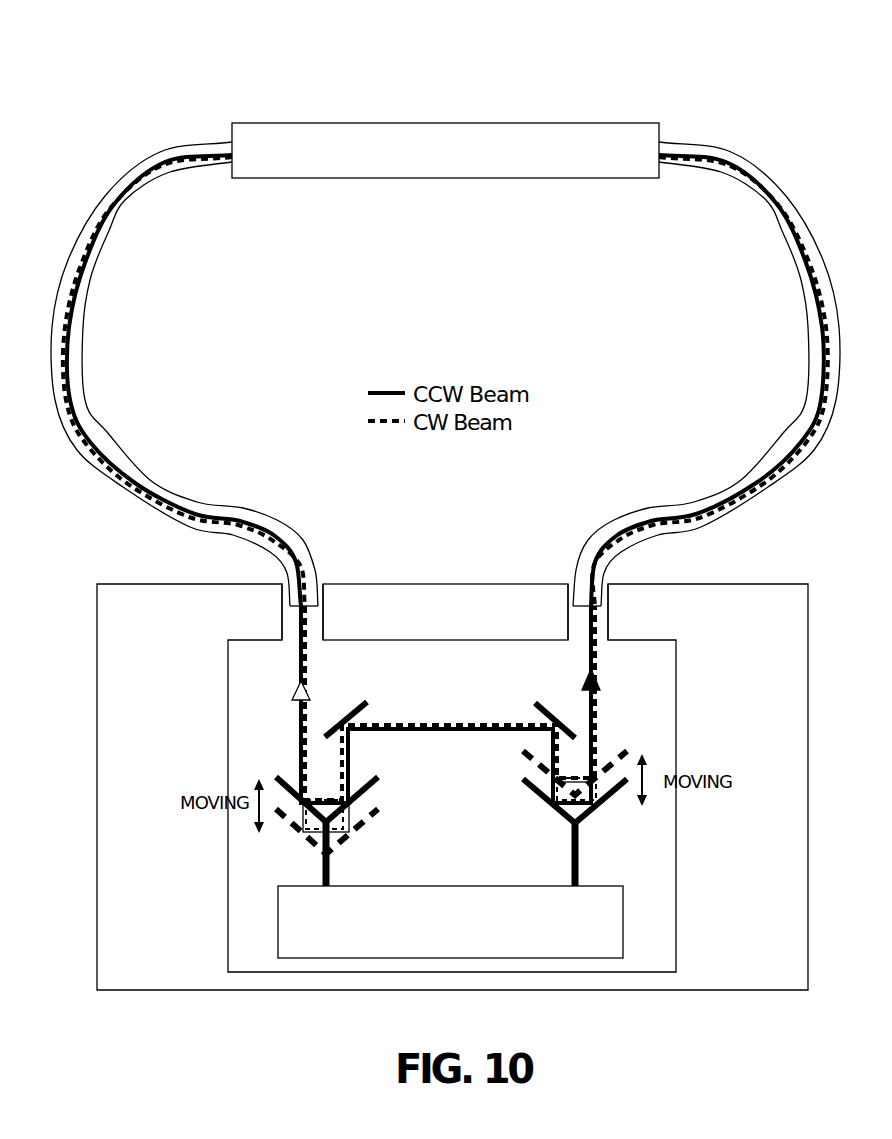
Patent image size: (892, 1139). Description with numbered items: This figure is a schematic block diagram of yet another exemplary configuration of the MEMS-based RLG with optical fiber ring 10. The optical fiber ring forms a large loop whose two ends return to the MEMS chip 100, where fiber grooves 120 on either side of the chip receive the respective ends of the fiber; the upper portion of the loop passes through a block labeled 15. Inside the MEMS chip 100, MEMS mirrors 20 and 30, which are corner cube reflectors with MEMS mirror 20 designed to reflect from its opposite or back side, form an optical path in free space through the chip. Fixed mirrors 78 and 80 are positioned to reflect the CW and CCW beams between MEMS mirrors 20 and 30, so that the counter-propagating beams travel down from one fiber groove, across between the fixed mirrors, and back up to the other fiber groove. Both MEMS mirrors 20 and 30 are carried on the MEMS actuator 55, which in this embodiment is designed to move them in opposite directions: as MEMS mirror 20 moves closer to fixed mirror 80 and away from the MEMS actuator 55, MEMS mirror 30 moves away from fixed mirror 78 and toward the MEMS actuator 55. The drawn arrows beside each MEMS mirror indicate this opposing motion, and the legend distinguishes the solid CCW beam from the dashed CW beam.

The MEMS-based RLG with optical fiber ring 10 is at (146, 112).
The optical component / coupler 15 is at (447, 162).
The MEMS chip 100 is at (736, 612).
The fiber grooves 120 is at (563, 561).
The fixed mirror 80 is at (342, 717).
The fixed mirror 78 is at (556, 716).
The MEMS mirror 20 is at (370, 795).
The MEMS mirror 30 is at (535, 803).
The MEMS actuator 55 is at (456, 943).